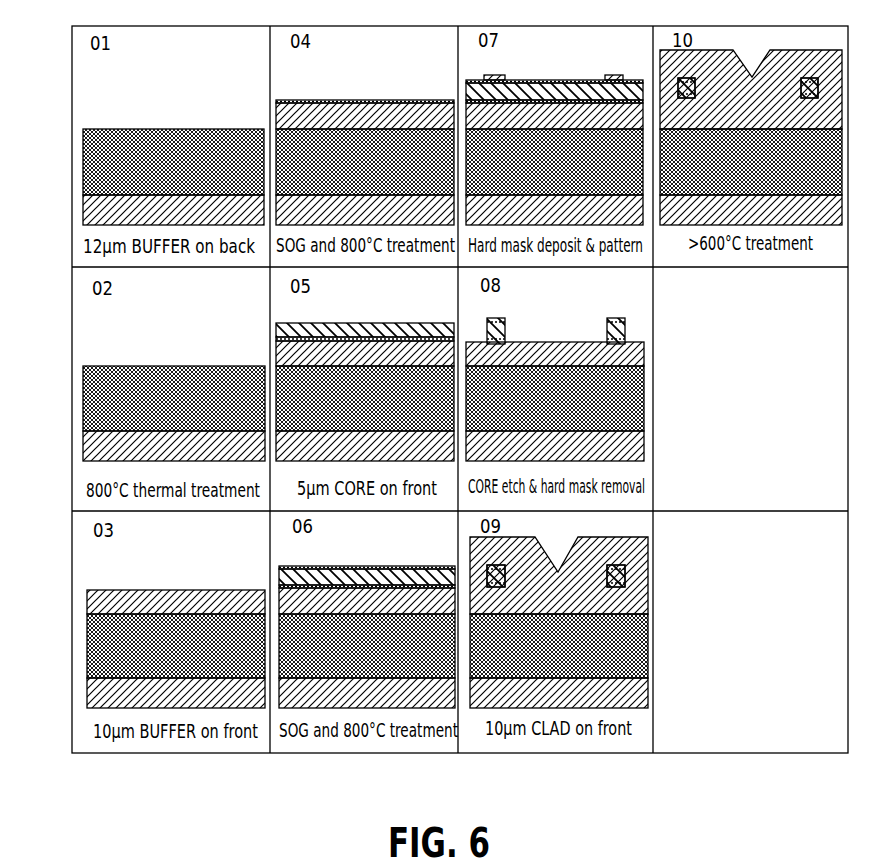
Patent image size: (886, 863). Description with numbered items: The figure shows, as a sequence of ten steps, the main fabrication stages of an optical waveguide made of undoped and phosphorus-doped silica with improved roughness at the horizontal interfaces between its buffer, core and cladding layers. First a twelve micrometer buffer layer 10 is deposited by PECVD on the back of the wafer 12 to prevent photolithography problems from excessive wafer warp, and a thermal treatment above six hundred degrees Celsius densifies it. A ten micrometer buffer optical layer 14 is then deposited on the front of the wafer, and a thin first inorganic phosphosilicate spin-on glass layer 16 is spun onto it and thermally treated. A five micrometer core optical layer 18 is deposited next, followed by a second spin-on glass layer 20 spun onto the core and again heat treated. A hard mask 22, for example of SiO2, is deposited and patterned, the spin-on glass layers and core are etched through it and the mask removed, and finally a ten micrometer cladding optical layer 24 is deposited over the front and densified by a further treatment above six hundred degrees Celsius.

The buffer layer 10 is at (88, 210).
The wafer 12 is at (90, 143).
The buffer optical layer 14 is at (352, 110).
The first spin-on glass layer 16 is at (395, 100).
The core optical layer 18 is at (388, 327).
The second spin-on glass layer 20 is at (548, 80).
The hard mask 22 is at (493, 76).
The cladding optical layer 24 is at (710, 64).